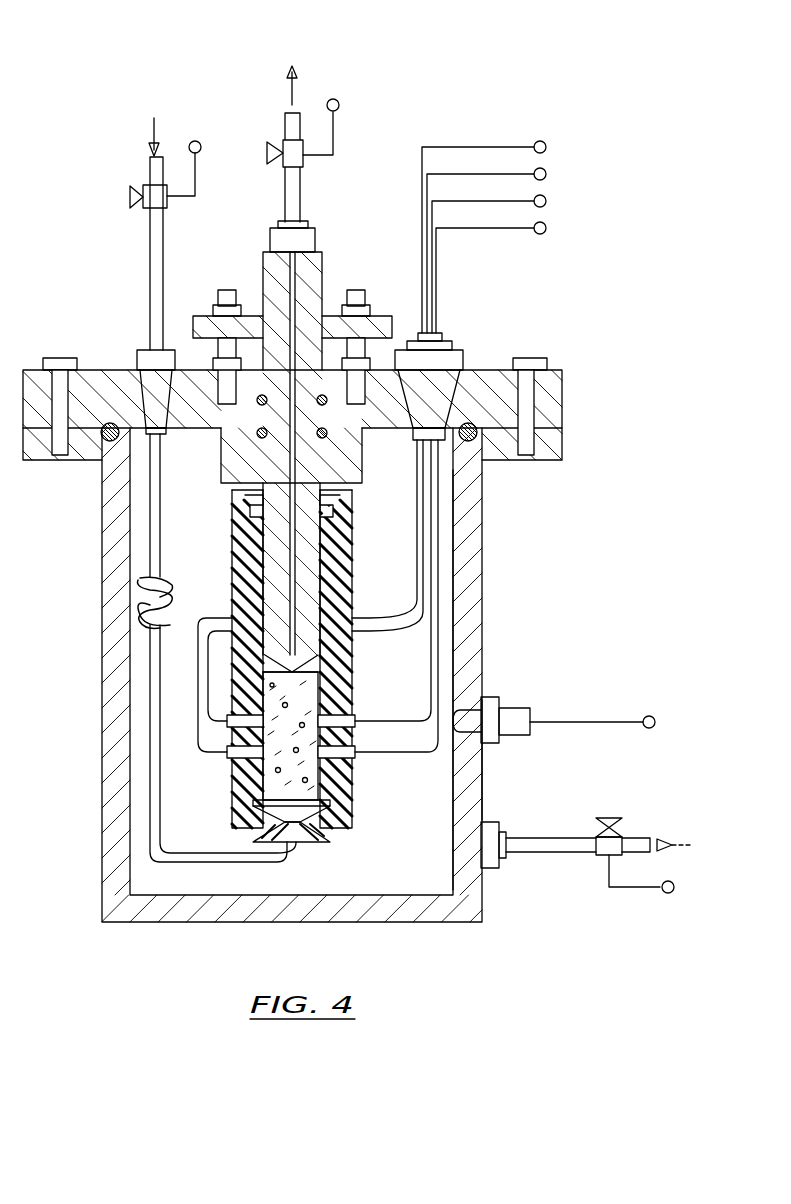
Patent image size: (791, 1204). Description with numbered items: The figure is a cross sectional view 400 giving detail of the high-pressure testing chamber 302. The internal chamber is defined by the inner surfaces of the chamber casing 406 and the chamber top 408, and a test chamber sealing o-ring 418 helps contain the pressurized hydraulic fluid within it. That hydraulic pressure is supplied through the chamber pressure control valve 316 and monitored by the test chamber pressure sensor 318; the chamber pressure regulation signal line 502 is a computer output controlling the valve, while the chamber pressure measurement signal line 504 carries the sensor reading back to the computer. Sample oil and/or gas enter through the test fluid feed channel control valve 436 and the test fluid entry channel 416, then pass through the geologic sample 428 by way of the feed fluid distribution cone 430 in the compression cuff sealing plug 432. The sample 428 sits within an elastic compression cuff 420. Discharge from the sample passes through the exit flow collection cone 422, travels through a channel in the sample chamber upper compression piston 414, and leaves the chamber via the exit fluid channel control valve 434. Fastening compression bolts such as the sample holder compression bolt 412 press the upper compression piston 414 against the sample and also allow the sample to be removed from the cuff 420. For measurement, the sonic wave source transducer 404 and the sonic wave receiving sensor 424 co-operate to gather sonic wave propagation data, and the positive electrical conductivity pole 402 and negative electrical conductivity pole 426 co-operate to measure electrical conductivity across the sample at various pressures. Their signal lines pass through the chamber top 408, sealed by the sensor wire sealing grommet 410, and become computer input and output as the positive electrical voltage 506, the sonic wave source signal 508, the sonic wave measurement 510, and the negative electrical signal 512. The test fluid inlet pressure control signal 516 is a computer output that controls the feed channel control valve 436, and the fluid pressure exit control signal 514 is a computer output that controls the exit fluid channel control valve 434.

The testing chamber 302 is at (175, 925).
The chamber pressure control valve 316 is at (612, 845).
The test chamber pressure sensor 318 is at (505, 718).
The cross sectional view 400 is at (574, 86).
The positive electrical conductivity pole 402 is at (482, 793).
The sonic wave source transducer 404 is at (320, 690).
The chamber casing 406 is at (470, 545).
The chamber top 408 is at (548, 400).
The sensor wire sealing grommet 410 is at (455, 365).
The sample holder compression bolt 412 is at (358, 290).
The sample chamber upper compression piston 414 is at (312, 262).
The test fluid entry channel 416 is at (150, 300).
The test chamber sealing o-ring 418 is at (103, 440).
The elastic compression cuff 420 is at (237, 542).
The exit flow collection cone 422 is at (262, 652).
The sonic wave receiving sensor 424 is at (255, 718).
The negative electrical conductivity pole 426 is at (240, 775).
The geologic sample 428 is at (232, 807).
The feed fluid distribution cone 430 is at (232, 825).
The compression cuff sealing plug 432 is at (300, 842).
The exit fluid channel control valve 434 is at (278, 140).
The test fluid feed channel control valve 436 is at (138, 187).
The chamber pressure regulation signal line 502 is at (664, 879).
The chamber pressure measurement signal line 504 is at (616, 725).
The positive electrical voltage 506 is at (511, 276).
The sonic wave source signal 508 is at (509, 263).
The sonic wave measurement 510 is at (507, 249).
The negative electrical signal 512 is at (504, 236).
The fluid pressure exit control signal 514 is at (327, 113).
The test fluid inlet pressure control signal 516 is at (192, 156).